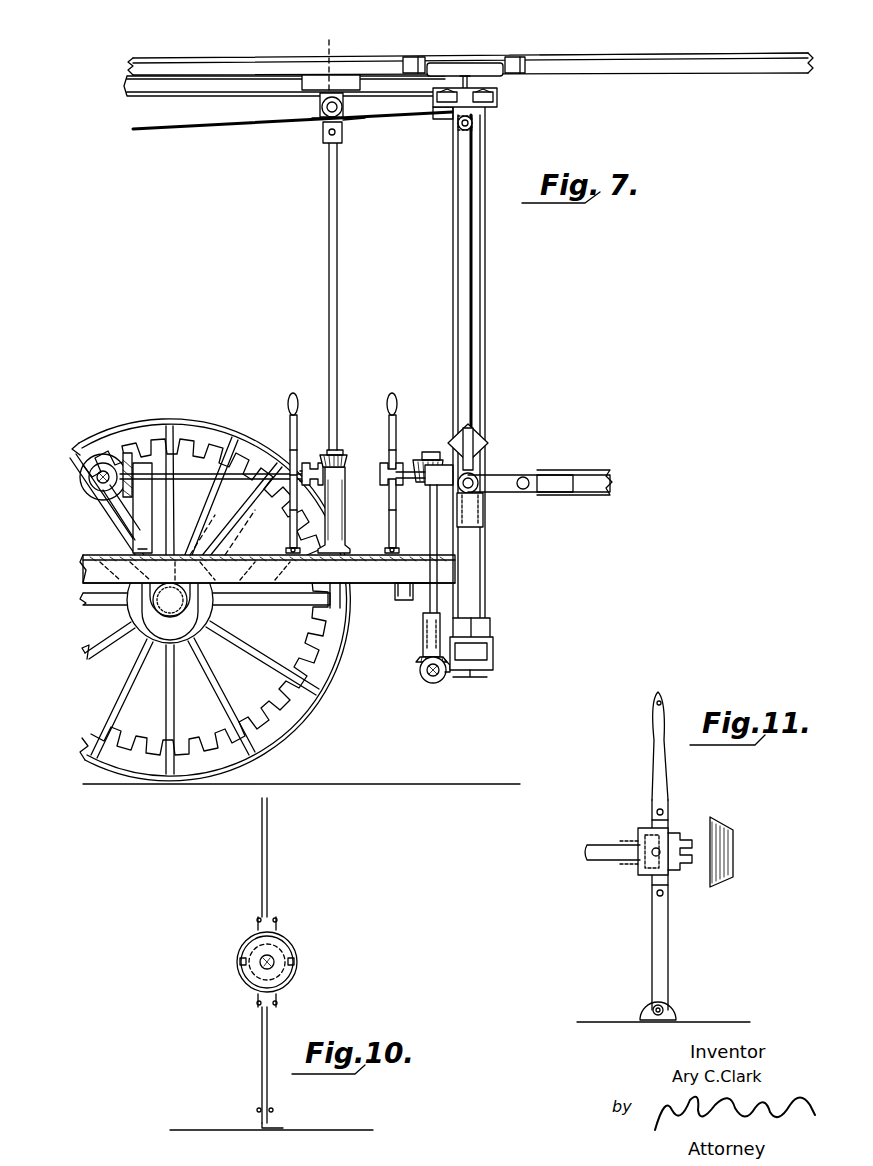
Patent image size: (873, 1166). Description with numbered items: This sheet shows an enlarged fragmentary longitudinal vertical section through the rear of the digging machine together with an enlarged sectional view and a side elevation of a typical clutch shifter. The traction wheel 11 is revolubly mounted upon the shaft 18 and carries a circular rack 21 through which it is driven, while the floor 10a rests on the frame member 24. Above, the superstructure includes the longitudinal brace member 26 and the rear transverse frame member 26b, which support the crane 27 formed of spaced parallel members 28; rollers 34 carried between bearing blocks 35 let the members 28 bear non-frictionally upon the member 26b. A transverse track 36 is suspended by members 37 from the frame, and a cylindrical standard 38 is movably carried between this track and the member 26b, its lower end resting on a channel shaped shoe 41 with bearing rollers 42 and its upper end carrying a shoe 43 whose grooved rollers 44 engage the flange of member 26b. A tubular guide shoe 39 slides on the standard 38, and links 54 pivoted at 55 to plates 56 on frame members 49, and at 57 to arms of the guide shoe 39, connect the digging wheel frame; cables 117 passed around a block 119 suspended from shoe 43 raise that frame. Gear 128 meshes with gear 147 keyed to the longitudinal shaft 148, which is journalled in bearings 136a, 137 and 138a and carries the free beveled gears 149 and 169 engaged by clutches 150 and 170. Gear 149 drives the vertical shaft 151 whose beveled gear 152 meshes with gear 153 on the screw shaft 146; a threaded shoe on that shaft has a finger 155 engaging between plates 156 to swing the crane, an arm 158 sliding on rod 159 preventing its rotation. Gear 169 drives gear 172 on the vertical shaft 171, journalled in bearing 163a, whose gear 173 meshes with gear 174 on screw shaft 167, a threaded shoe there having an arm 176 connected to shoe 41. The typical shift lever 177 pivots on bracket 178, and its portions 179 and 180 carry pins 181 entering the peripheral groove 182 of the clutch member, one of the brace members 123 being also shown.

In FIG. 7, the floor 10a is at (230, 552).
In FIG. 7, the traction wheel 11 is at (285, 718).
In FIG. 7, the shaft 18 is at (185, 605).
In FIG. 7, the circular rack 21 is at (275, 700).
In FIG. 7, the frame member 24 is at (267, 569).
In FIG. 7, the longitudinal brace member 26 is at (190, 88).
In FIG. 7, the rear transverse frame member 26b is at (470, 82).
In FIG. 7, the crane 27 is at (270, 58).
In FIG. 7, the crane member 28 is at (685, 60).
In FIG. 7, the roller 34 is at (460, 64).
In FIG. 7, the bearing block 35 is at (411, 60).
In FIG. 7, the track 36 is at (472, 680).
In FIG. 7, the suspending member 37 is at (420, 598).
In FIG. 7, the standard 38 is at (470, 278).
In FIG. 7, the guide shoe 39 is at (482, 520).
In FIG. 7, the channel shaped shoe 41 is at (490, 630).
In FIG. 7, the bearing roller 42 is at (493, 660).
In FIG. 7, the shoe 43 is at (435, 115).
In FIG. 7, the grooved roller 44 is at (498, 102).
In FIG. 7, the frame member 49 is at (605, 470).
In FIG. 7, the link 54 is at (505, 475).
In FIG. 7, the pivot 55 is at (525, 478).
In FIG. 7, the plate 56 is at (575, 495).
In FIG. 7, the pivot 57 is at (478, 490).
In FIG. 7, the cable 117 is at (205, 125).
In FIG. 7, the block 119 is at (474, 126).
In FIG. 7, the brace 123 is at (103, 490).
In FIG. 7, the gear 128 is at (103, 462).
In FIG. 7, the bearing 136a is at (142, 535).
In FIG. 7, the bearing 137 is at (432, 487).
In FIG. 7, the bearing 138a is at (340, 508).
In FIG. 7, the screw shaft 146 is at (322, 118).
In FIG. 7, the gear 147 is at (128, 452).
In FIG. 7, the shaft 148 is at (200, 480).
In FIG. 7, the beveled gear 149 is at (312, 462).
In FIG. 7, the clutch 150 is at (288, 455).
In FIG. 7, the shaft 151 is at (328, 262).
In FIG. 7, the beveled gear 152 is at (343, 455).
In FIG. 7, the gear 153 is at (320, 108).
In FIG. 7, the finger 155 is at (322, 58).
In FIG. 7, the plate 156 is at (345, 75).
In FIG. 7, the arm 158 is at (326, 143).
In FIG. 7, the rod 159 is at (340, 136).
In FIG. 7, the bearing 163a is at (422, 630).
In FIG. 7, the screw shaft 167 is at (430, 676).
In FIG. 7, the beveled gear 169 is at (422, 460).
In FIG. 7, the clutch 170 is at (388, 470).
In FIG. 7, the shaft 171 is at (429, 556).
In FIG. 7, the beveled gear 172 is at (431, 452).
In FIG. 7, the gear 173 is at (416, 660).
In FIG. 7, the gear 174 is at (422, 678).
In FIG. 7, the arm 176 is at (447, 673).
In FIG. 10, the shift lever 177 is at (268, 870).
In FIG. 11, the shift lever 177 is at (652, 758).
In FIG. 10, the bracket 178 is at (260, 1126).
In FIG. 11, the bracket 178 is at (645, 1010).
In FIG. 10, the portion 179 is at (245, 980).
In FIG. 10, the portion 180 is at (300, 980).
In FIG. 11, the portion 180 is at (672, 875).
In FIG. 10, the pin 181 is at (240, 962).
In FIG. 11, the pin 181 is at (650, 858).
In FIG. 10, the peripheral groove 182 is at (293, 940).
In FIG. 11, the peripheral groove 182 is at (640, 830).